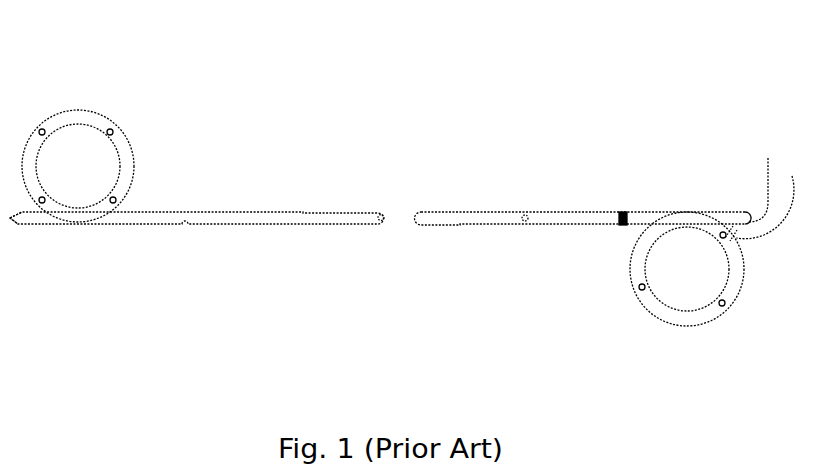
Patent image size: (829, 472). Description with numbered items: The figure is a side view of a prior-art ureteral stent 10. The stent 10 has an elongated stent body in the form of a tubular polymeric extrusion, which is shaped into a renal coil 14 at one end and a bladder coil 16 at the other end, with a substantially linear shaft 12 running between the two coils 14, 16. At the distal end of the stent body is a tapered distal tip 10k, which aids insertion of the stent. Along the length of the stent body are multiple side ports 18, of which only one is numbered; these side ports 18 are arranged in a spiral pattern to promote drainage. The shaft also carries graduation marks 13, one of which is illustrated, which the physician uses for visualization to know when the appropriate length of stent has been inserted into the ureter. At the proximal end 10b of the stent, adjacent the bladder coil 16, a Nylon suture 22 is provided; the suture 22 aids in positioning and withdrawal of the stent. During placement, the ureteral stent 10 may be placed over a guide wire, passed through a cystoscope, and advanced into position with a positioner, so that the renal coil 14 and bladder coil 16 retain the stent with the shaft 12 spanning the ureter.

The stent 10 is at (380, 133).
The proximal end 10b is at (723, 197).
The tapered distal tip 10k is at (40, 236).
The shaft 12 is at (358, 217).
The graduation marks 13 is at (620, 227).
The renal coil 14 is at (81, 115).
The bladder coil 16 is at (672, 313).
The side ports 18 is at (526, 217).
The Nylon suture 22 is at (752, 238).